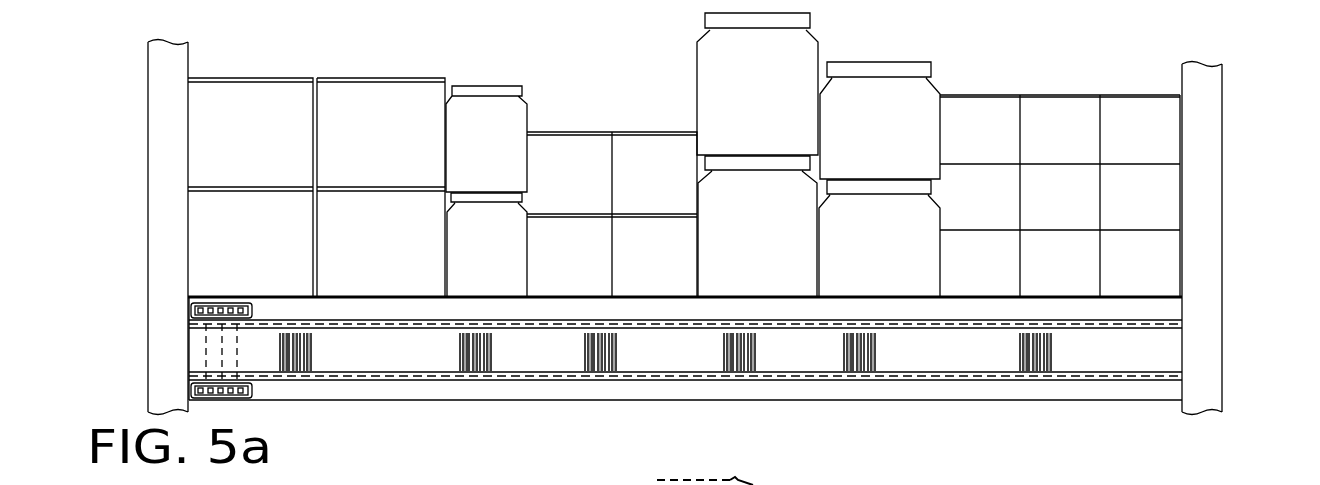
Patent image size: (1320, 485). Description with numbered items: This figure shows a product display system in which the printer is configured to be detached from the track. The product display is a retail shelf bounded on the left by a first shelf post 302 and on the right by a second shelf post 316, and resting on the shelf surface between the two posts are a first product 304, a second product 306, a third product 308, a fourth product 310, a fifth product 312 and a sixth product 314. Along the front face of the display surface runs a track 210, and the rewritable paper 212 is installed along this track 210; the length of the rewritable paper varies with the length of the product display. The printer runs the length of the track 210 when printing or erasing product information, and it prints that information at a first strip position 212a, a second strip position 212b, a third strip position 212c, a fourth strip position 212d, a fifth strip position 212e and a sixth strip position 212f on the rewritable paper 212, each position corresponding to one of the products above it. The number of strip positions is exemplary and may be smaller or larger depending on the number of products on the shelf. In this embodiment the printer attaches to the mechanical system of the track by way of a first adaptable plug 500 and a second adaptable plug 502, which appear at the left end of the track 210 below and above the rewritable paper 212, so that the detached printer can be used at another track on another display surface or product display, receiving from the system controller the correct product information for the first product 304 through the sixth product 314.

The first shelf post 302 is at (176, 40).
The first product 304 is at (260, 78).
The second product 306 is at (478, 86).
The third product 308 is at (560, 132).
The fourth product 310 is at (812, 37).
The fifth product 312 is at (916, 62).
The sixth product 314 is at (1005, 95).
The second shelf post 316 is at (1214, 62).
The rewritable paper 212 is at (1180, 350).
The track 210 is at (1098, 324).
The second adaptable plug 502 is at (190, 305).
The first adaptable plug 500 is at (190, 390).
The first strip position 212a is at (333, 363).
The second strip position 212b is at (507, 363).
The third strip position 212c is at (632, 363).
The fourth strip position 212d is at (768, 363).
The fifth strip position 212e is at (900, 363).
The sixth strip position 212f is at (1064, 363).